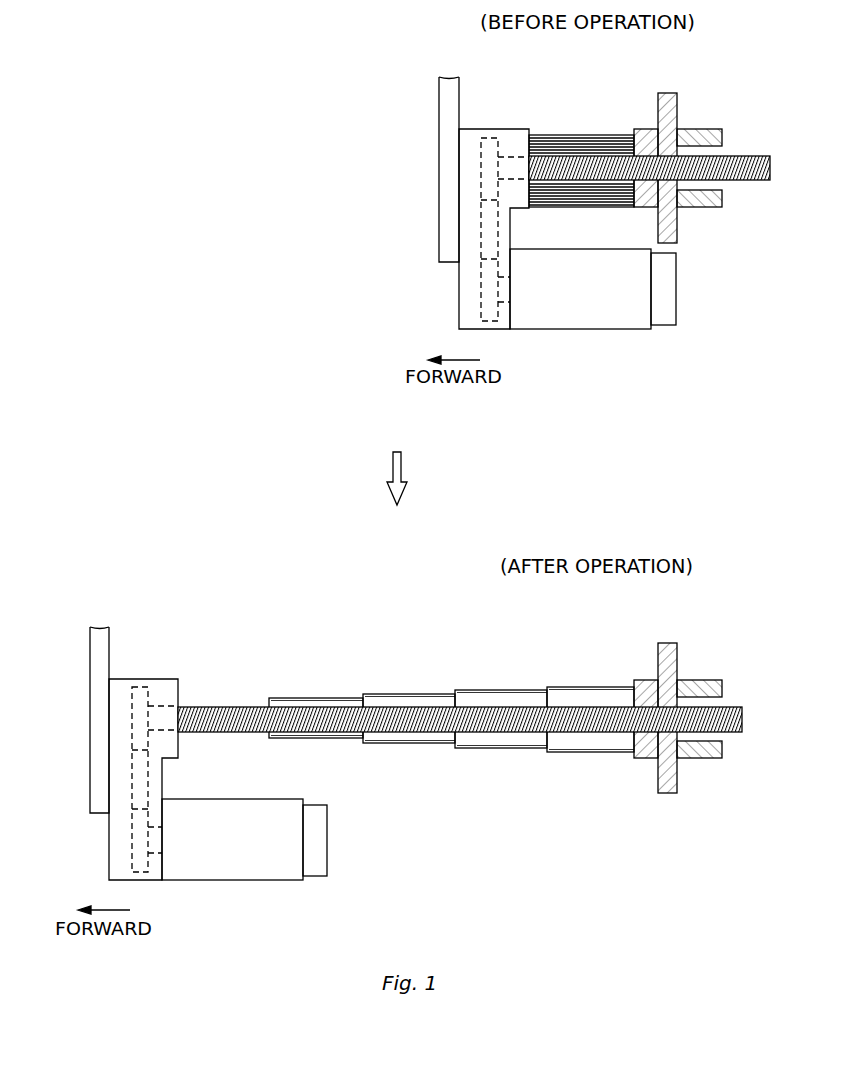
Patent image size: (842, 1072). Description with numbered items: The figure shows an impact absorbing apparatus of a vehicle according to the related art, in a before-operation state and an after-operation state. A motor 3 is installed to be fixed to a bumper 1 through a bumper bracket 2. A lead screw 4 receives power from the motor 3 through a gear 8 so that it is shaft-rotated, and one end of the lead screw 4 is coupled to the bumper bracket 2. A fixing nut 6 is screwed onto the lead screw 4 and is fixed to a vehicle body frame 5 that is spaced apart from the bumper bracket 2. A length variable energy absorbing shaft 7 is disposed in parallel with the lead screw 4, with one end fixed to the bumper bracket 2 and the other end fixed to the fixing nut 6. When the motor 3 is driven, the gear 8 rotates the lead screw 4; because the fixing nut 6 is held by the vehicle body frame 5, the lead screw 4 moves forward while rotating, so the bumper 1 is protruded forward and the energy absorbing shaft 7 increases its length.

The bumper 1 is at (447, 167).
The bumper bracket 2 is at (460, 294).
The motor 3 is at (583, 316).
The lead screw 4 is at (755, 150).
The vehicle body frame 5 is at (707, 128).
The fixing nut 6 is at (647, 128).
The energy absorbing shaft 7 is at (562, 134).
The gear 8 is at (488, 223).